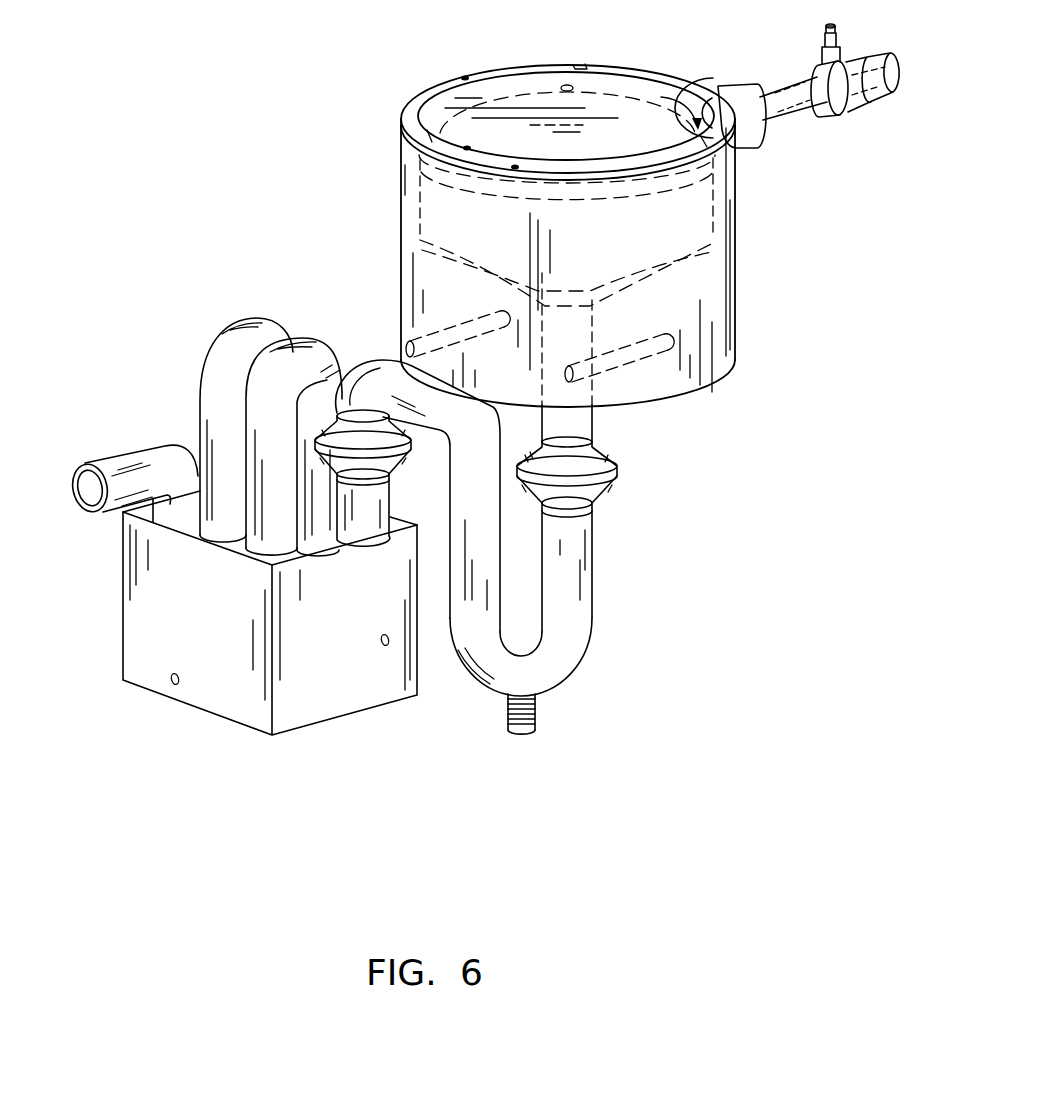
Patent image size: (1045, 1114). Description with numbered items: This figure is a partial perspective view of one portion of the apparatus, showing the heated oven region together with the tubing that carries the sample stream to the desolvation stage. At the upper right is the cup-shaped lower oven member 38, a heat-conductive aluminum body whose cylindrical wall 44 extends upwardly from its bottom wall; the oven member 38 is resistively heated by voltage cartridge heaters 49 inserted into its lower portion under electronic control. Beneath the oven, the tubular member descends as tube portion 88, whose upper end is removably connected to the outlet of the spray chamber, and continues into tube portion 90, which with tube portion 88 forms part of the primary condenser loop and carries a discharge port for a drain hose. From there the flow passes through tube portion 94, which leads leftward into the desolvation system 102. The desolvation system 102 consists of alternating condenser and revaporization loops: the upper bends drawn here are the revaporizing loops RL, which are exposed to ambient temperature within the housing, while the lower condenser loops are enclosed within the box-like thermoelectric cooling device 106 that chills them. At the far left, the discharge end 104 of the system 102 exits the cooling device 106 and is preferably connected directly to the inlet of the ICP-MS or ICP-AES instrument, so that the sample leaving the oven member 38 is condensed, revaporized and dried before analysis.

The lower oven member 38 is at (728, 262).
The cylindrical wall 44 is at (488, 240).
The voltage cartridge heaters 49 is at (668, 342).
The tube portion 88 is at (622, 556).
The tube portion 90 is at (548, 677).
The tube portion 94 is at (390, 373).
The desolvation system 102 is at (212, 385).
The revaporizing loops RL is at (290, 359).
The discharge end 104 is at (67, 490).
The thermoelectric cooling device 106 is at (322, 688).